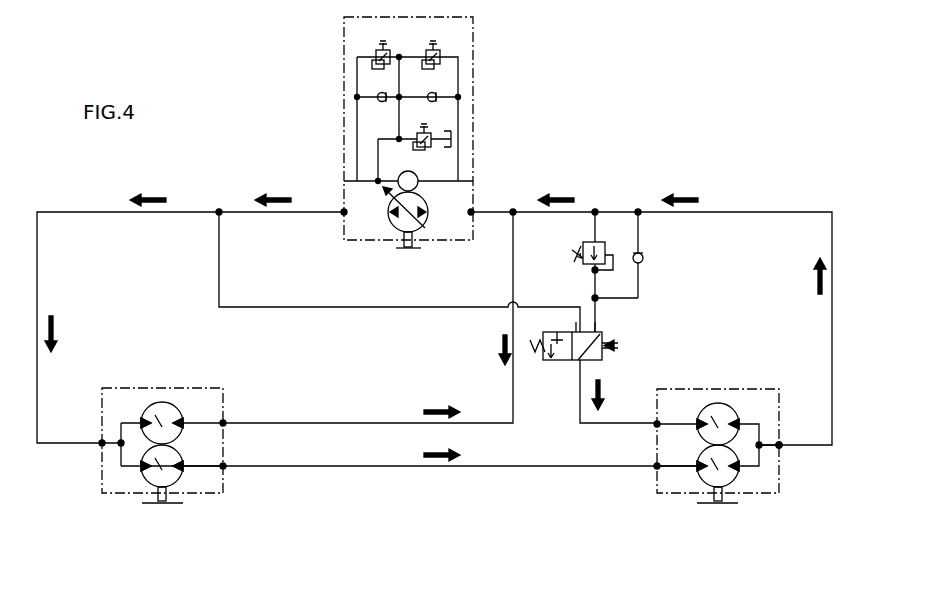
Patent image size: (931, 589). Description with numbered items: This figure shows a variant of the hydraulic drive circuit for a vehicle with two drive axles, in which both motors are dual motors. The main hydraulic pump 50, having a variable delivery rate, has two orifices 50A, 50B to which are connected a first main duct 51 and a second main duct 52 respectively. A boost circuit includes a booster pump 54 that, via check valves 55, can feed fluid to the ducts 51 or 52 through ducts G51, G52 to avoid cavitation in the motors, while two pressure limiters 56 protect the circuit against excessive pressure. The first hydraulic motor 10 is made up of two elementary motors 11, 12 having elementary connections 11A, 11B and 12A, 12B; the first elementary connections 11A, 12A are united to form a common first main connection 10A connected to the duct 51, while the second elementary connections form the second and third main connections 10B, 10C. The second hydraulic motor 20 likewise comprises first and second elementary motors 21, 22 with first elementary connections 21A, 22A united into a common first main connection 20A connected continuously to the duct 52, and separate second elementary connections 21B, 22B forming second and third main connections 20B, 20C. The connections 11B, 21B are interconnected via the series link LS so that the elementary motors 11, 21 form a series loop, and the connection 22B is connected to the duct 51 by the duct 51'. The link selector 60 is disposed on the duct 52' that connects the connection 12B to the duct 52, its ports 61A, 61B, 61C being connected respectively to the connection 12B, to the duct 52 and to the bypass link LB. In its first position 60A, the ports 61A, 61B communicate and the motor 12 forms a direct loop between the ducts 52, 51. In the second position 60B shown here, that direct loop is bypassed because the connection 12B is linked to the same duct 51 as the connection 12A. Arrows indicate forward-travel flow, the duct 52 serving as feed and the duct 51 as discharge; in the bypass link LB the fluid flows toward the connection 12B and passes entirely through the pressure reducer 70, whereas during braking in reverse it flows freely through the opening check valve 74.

The first hydraulic motor 10 is at (762, 385).
The first main connection 10A is at (780, 447).
The second main connection 10B is at (655, 468).
The third main connection 10C is at (656, 422).
The first elementary motor 11 is at (718, 480).
The first elementary connection 11A is at (735, 470).
The second elementary connection 11B is at (704, 470).
The second elementary motor 12 is at (718, 414).
The first elementary connection 12A is at (735, 421).
The second elementary connection 12B is at (704, 421).
The second hydraulic motor 20 is at (99, 423).
The first main connection 20A is at (102, 445).
The second main connection 20B is at (224, 468).
The third main connection 20C is at (224, 421).
The first elementary motor 21 is at (161, 478).
The first elementary connection 21A is at (145, 470).
The second elementary connection 21B is at (180, 470).
The second elementary motor 22 is at (161, 413).
The first elementary connection 22A is at (145, 421).
The second elementary connection 22B is at (180, 421).
The main hydraulic pump 50 is at (400, 233).
The pump orifice 50A is at (430, 224).
The pump orifice 50B is at (387, 224).
The first main duct 51 is at (650, 307).
The duct 51' is at (368, 317).
The second main duct 52 is at (192, 302).
The duct 52' is at (399, 272).
The booster pump 54 is at (413, 177).
The check valve 55 is at (437, 95).
The pressure limiter 56 is at (436, 52).
The link selector 60 is at (610, 358).
The first position 60A is at (547, 358).
The second position 60B is at (624, 345).
The selector port 61A is at (580, 362).
The selector port 61B is at (576, 332).
The selector port 61C is at (598, 334).
The pressure reducer 70 is at (581, 242).
The check valve 74 is at (648, 257).
The boost duct G51 is at (466, 118).
The boost duct G52 is at (357, 118).
The bypass link LB is at (590, 297).
The series link LS is at (340, 466).